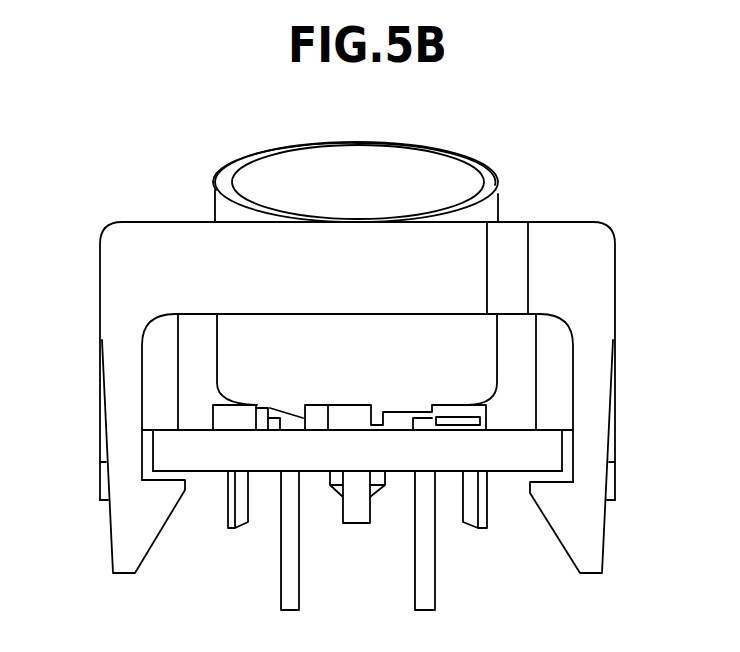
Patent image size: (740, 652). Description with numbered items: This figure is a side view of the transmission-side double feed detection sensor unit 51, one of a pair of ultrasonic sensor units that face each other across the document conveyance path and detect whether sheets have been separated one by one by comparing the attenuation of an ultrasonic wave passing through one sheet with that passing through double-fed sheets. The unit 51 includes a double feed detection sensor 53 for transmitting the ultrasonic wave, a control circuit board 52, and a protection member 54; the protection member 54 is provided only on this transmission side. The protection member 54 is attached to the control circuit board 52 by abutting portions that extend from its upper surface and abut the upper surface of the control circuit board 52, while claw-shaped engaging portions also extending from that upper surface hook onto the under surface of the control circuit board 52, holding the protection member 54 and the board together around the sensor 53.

The transmission-side double feed detection sensor unit 51 is at (641, 285).
The control circuit board 52 is at (548, 452).
The double feed detection sensor 53 is at (431, 162).
The protection member 54 is at (468, 273).